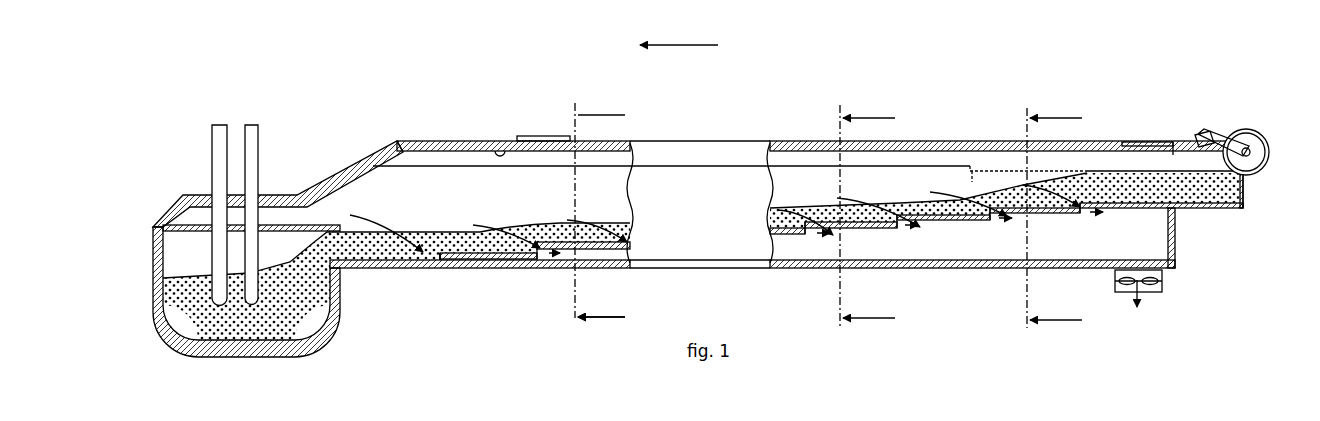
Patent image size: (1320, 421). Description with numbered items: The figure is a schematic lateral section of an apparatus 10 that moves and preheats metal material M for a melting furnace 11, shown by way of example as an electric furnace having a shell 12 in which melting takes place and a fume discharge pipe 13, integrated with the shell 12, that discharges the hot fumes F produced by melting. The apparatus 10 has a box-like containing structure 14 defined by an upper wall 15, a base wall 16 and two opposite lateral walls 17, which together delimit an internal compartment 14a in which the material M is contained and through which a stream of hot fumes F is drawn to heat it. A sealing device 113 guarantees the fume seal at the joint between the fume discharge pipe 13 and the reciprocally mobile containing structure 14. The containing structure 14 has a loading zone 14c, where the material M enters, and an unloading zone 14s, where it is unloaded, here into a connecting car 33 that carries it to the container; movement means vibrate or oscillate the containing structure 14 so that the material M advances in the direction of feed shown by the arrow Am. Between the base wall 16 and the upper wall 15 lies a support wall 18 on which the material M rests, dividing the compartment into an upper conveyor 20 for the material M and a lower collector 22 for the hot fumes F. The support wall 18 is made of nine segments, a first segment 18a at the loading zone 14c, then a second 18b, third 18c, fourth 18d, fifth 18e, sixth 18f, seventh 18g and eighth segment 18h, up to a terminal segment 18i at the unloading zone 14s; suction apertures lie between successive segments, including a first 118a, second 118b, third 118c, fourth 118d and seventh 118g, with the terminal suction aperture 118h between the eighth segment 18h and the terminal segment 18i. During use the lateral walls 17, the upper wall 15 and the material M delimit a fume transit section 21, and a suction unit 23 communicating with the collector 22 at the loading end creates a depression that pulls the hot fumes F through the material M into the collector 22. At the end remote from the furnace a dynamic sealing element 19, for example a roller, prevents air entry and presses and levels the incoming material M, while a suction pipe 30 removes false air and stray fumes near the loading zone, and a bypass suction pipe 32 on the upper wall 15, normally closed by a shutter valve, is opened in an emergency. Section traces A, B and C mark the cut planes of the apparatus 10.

The apparatus 10 is at (289, 104).
The melting furnace 11 is at (266, 318).
The shell 12 is at (320, 321).
The fume discharge pipe 13 is at (374, 160).
The sealing device 113 is at (395, 140).
The containing structure 14 is at (808, 153).
The internal compartment 14a is at (1011, 164).
The loading zone 14c is at (1112, 165).
The unloading zone 14s is at (430, 158).
The upper wall 15 is at (473, 147).
The base wall 16 is at (786, 266).
The lateral walls 17 is at (733, 181).
The support wall 18 is at (852, 243).
The first segment 18a is at (1195, 208).
The second segment 18b is at (1053, 213).
The third segment 18c is at (952, 220).
The fourth segment 18d is at (877, 228).
The fifth segment 18e is at (768, 233).
The sixth segment 18f is at (628, 238).
The seventh segment 18g is at (625, 250).
The eighth segment 18h is at (478, 259).
The terminal segment 18i is at (440, 257).
The first suction aperture 118a is at (1085, 208).
The second suction aperture 118b is at (1000, 216).
The third suction aperture 118c is at (913, 222).
The fourth suction aperture 118d is at (817, 236).
The seventh suction aperture 118g is at (540, 250).
The terminal suction aperture 118h is at (440, 252).
The dynamic sealing element 19 is at (1228, 137).
The conveyor 20 is at (769, 175).
The fume transit section 21 is at (500, 148).
The collector 22 is at (1145, 289).
The suction unit 23 is at (1157, 288).
The suction pipe 30 is at (1145, 142).
The suction pipe 32 is at (537, 137).
The connecting car 33 is at (380, 266).
The metal material M is at (1217, 208).
The hot fumes F is at (372, 221).
The direction of feed Am is at (689, 44).
The section A is at (1054, 210).
The section B is at (867, 212).
The section C is at (600, 206).